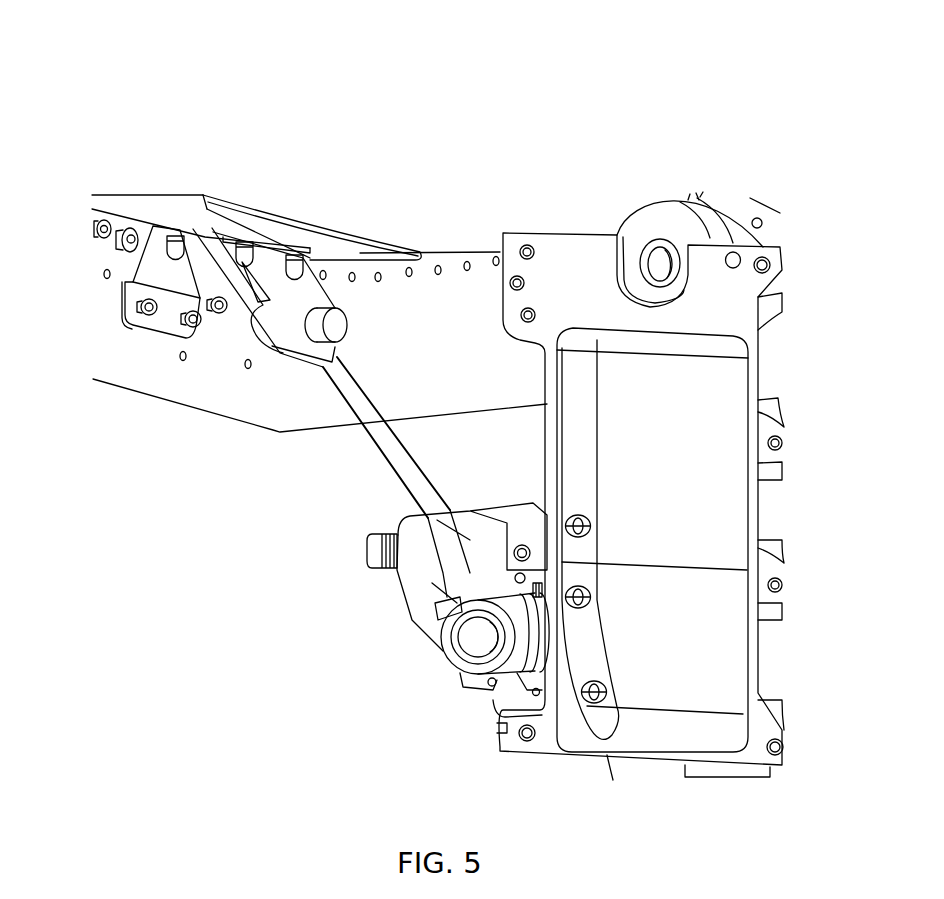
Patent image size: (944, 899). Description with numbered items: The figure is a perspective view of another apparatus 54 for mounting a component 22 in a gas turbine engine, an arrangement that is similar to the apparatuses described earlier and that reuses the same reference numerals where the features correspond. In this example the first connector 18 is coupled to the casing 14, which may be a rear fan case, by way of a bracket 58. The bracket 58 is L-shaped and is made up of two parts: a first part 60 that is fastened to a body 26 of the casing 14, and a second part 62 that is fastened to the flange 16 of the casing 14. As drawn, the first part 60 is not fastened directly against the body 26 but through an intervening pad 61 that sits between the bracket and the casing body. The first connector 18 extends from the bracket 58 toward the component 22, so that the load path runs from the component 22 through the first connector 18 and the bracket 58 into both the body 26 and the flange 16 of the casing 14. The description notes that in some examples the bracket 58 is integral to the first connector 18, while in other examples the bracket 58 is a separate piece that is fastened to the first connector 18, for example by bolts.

The apparatus 54 is at (572, 84).
The casing 14 is at (362, 210).
The flange 16 is at (432, 345).
The first connector 18 is at (327, 386).
The component 22 is at (727, 660).
The body 26 is at (258, 208).
The bracket 58 is at (110, 322).
The first part 60 is at (205, 230).
The pad 61 is at (148, 204).
The second part 62 is at (172, 305).